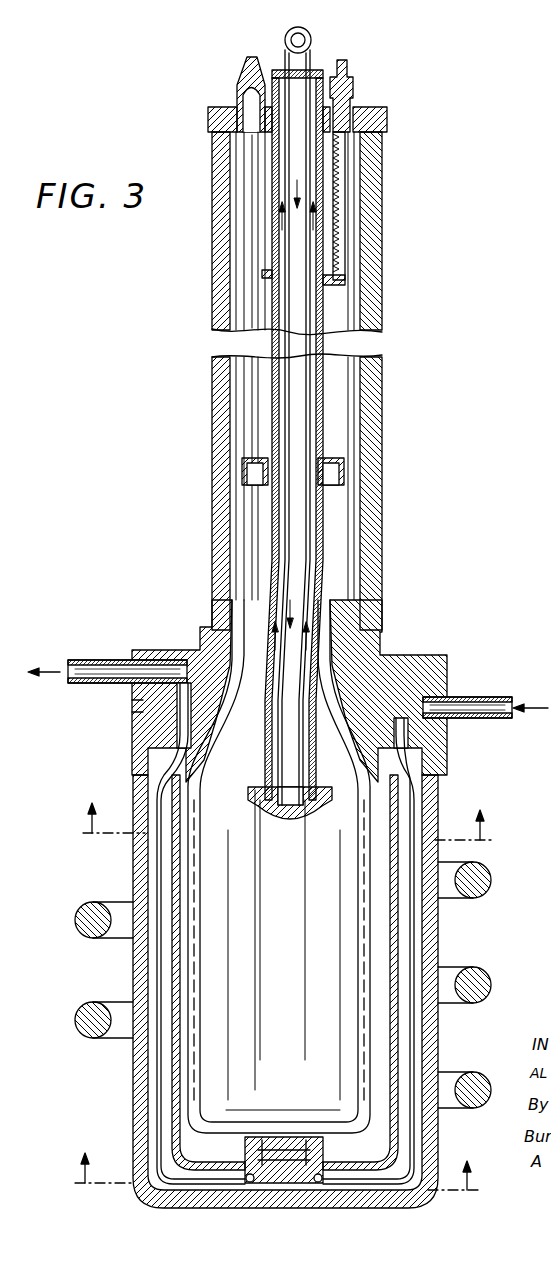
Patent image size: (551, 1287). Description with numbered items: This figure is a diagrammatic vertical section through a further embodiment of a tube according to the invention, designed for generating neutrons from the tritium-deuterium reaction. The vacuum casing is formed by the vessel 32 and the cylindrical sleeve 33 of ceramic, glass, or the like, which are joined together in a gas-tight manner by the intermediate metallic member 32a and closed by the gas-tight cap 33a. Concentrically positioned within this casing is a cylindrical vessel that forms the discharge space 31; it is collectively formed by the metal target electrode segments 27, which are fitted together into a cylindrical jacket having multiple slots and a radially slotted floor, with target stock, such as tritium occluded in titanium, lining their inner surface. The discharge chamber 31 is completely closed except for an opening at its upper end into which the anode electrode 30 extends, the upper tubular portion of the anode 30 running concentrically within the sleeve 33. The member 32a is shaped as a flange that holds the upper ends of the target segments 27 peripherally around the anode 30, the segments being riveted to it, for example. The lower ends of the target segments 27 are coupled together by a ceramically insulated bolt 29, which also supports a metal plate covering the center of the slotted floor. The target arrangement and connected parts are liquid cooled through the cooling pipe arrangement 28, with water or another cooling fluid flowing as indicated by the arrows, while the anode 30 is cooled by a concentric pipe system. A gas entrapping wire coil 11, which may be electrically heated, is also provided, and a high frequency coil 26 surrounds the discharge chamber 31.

The gas entrapping wire coil 11 is at (353, 215).
The high frequency coil 26 is at (102, 936).
The metal target electrode segments 27 is at (196, 1070).
The cooling pipe arrangement 28 is at (93, 668).
The ceramically insulated bolt 29 is at (282, 1136).
The anode electrode 30 is at (290, 812).
The discharge space 31 is at (292, 966).
The vessel 32 is at (438, 922).
The intermediate metallic member 32a is at (392, 658).
The cylindrical sleeve 33 is at (380, 365).
The gas-tight cap 33a is at (389, 122).